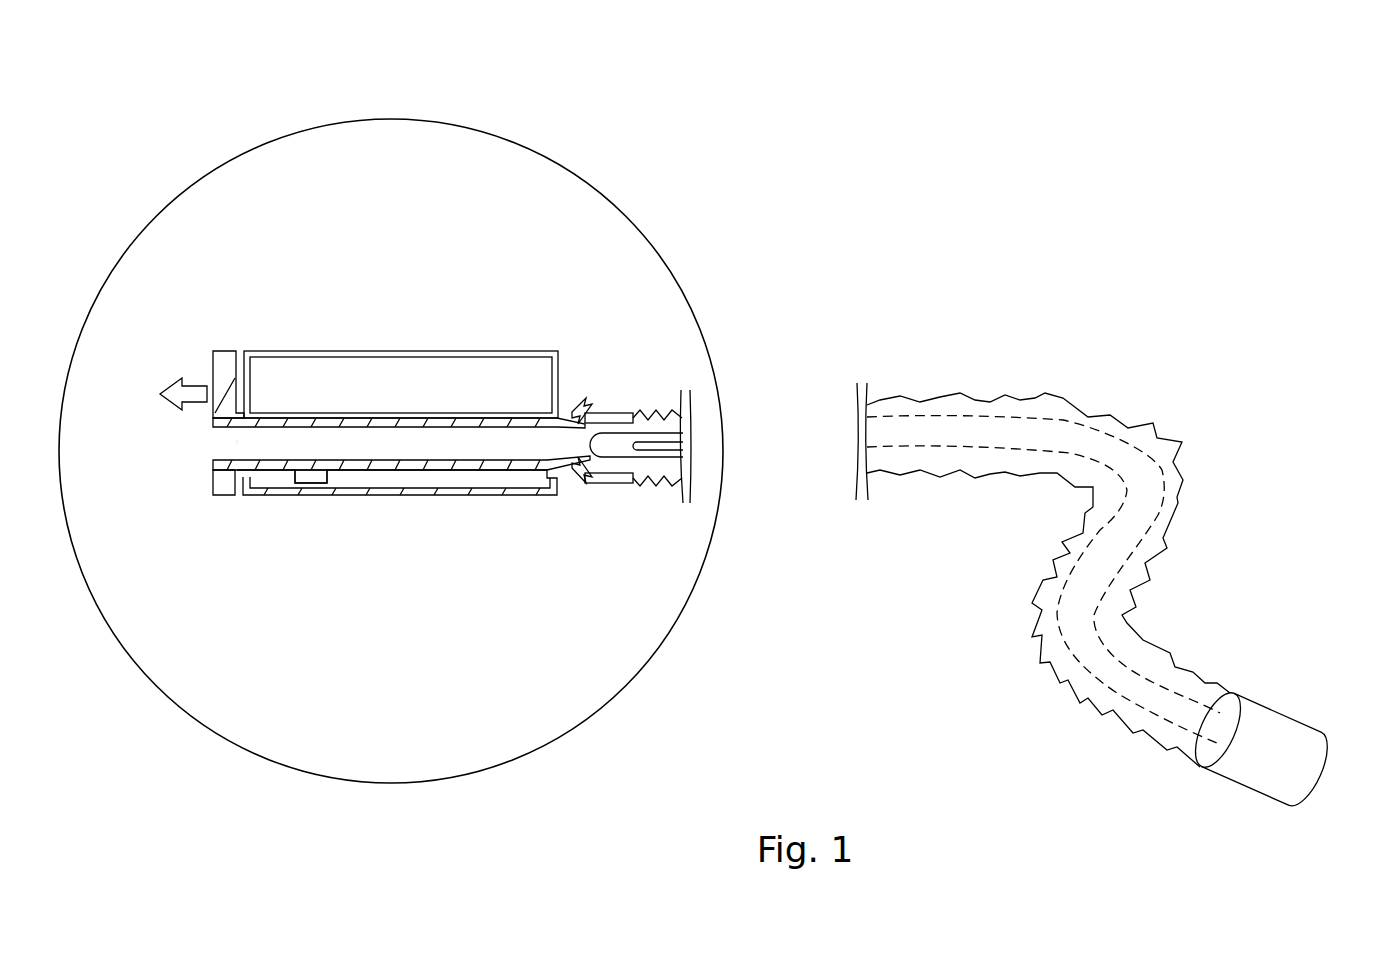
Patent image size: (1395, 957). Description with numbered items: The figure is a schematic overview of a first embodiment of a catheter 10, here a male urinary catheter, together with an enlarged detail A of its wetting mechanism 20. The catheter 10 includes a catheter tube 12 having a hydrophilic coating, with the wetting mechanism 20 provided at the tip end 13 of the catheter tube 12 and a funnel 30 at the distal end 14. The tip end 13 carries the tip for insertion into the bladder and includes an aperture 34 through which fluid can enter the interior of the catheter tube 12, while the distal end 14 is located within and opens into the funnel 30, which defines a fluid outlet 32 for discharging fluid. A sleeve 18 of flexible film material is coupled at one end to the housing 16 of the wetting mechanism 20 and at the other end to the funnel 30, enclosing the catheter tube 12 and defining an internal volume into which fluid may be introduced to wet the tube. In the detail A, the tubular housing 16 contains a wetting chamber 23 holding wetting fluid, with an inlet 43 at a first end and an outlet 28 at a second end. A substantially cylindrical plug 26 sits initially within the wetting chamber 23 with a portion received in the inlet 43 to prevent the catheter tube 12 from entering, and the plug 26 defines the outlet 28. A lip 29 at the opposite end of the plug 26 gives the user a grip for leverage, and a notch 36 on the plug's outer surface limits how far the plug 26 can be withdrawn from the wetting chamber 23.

The detail view A is at (222, 165).
The catheter 10 is at (625, 188).
The catheter tube 12 is at (1118, 457).
The tip end 13 is at (617, 458).
The distal end 14 is at (1196, 752).
The housing 16 is at (408, 338).
The sleeve 18 is at (1045, 400).
The wetting mechanism 20 is at (381, 544).
The wetting chamber 23 is at (487, 447).
The plug 26 is at (226, 505).
The outlet 28 is at (237, 442).
The lip 29 is at (212, 367).
The funnel 30 is at (1273, 717).
The fluid outlet 32 is at (1313, 780).
The aperture 34 is at (652, 442).
The notch 36 is at (310, 485).
The inlet 43 is at (573, 442).